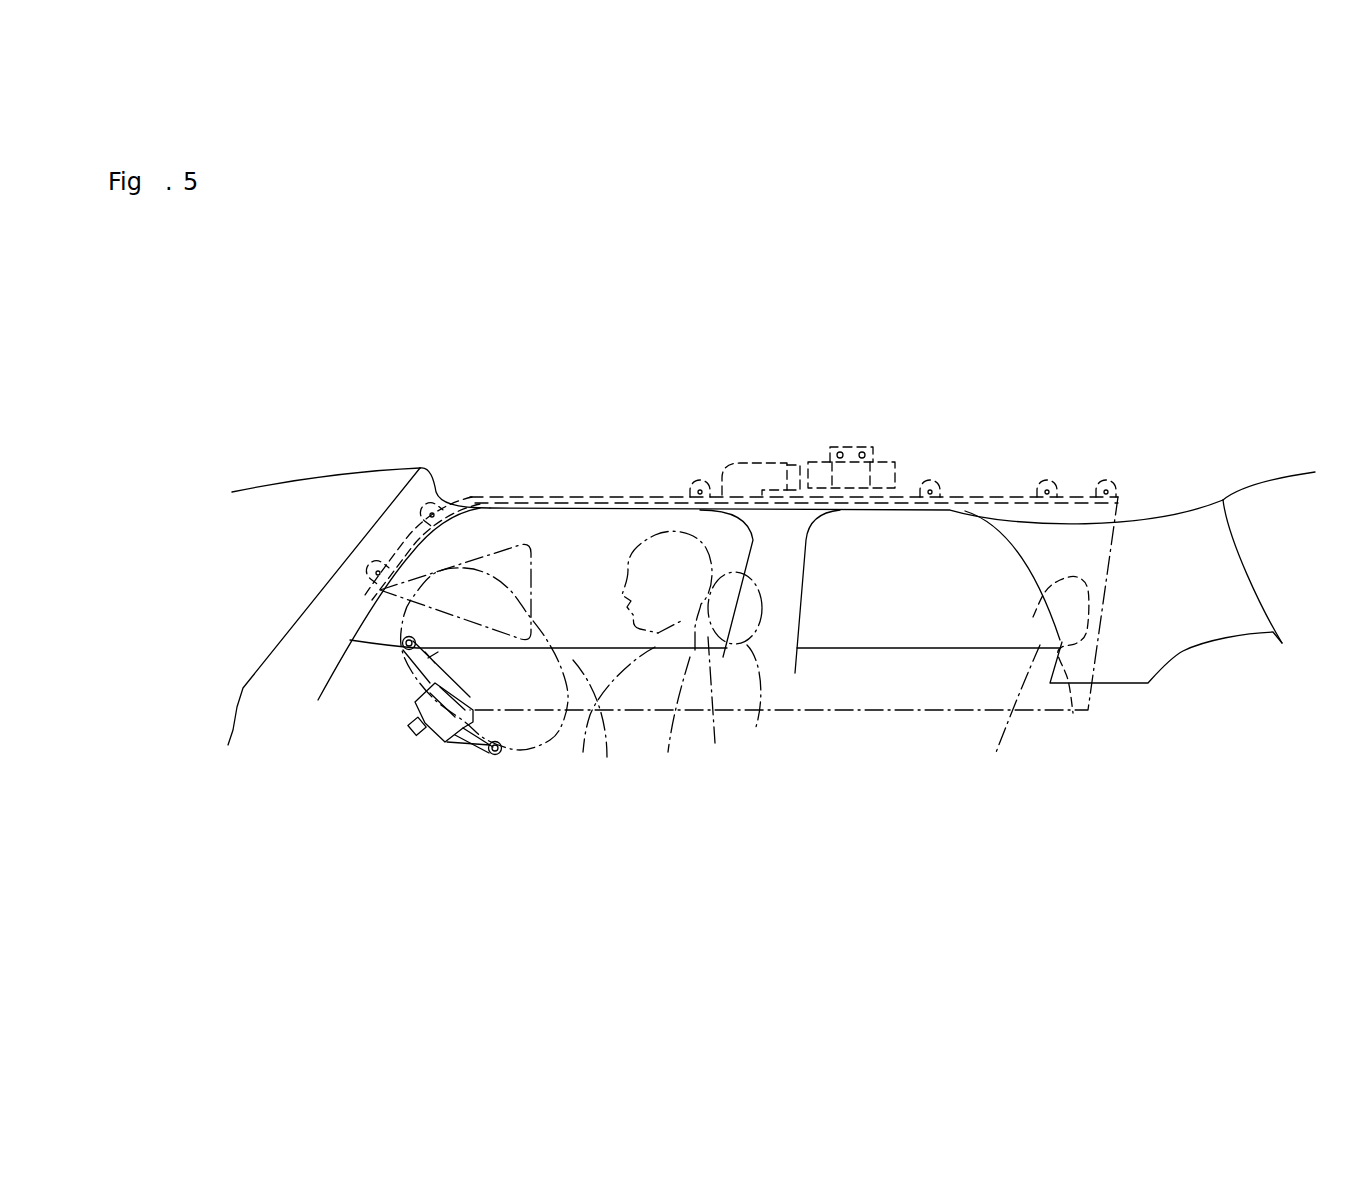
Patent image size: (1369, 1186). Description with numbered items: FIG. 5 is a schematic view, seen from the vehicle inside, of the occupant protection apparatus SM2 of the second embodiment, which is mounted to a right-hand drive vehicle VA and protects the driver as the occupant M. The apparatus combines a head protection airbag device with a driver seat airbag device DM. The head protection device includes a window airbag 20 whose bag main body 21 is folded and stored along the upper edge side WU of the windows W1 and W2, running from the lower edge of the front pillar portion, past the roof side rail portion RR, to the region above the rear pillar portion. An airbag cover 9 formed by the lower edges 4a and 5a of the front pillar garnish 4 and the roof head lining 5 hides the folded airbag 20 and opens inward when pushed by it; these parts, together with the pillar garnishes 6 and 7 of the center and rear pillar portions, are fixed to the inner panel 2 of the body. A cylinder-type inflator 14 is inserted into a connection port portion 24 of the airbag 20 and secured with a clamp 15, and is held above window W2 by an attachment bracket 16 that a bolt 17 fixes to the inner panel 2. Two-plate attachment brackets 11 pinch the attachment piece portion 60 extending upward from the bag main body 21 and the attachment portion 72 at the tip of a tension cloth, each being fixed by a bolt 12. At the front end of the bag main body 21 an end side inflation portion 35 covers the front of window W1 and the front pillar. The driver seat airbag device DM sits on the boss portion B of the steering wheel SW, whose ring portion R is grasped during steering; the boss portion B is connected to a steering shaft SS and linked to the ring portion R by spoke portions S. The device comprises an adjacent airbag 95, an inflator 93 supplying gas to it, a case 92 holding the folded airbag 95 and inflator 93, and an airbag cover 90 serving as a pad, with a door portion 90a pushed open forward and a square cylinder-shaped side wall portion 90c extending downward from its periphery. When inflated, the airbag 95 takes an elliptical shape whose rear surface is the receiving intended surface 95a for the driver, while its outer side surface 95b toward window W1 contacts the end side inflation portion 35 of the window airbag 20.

The right-hand drive vehicle VA is at (1160, 357).
The roof side rail portion RR is at (573, 432).
The front pillar garnish 4 is at (300, 582).
The pillar garnish 6 is at (792, 610).
The pillar garnish 7 is at (1173, 620).
The window W1 is at (667, 683).
The window W2 is at (948, 632).
The airbag 95 is at (556, 630).
The side surface 95b is at (478, 613).
The receiving intended surface 95a is at (607, 757).
The window airbag 20 is at (1122, 497).
The bag main body 21 is at (1045, 713).
The attachment bracket 11 is at (392, 707).
The bolt 12 is at (365, 580).
The attachment piece portion 60 is at (1063, 483).
The attachment portion 72 is at (330, 578).
The connection port portion 24 is at (755, 458).
The clamp 15 is at (788, 463).
The bolt 17 is at (863, 447).
The inflator 14 is at (890, 463).
The attachment bracket 16 is at (848, 477).
The window upper edge WU is at (652, 503).
The occupant protection apparatus SM2 is at (352, 368).
The inner panel 2 is at (377, 403).
The airbag cover 9 is at (530, 363).
The lower edge 4a is at (400, 545).
The lower edge 5a is at (522, 505).
The roof head lining 5 is at (548, 430).
The occupant M is at (650, 757).
The door portion 90a is at (380, 590).
The airbag cover 90 is at (473, 689).
The driver seat airbag device DM is at (445, 760).
The boss portion B is at (407, 718).
The steering wheel SW is at (407, 668).
The end side inflation portion 35 is at (397, 630).
The case 92 is at (415, 692).
The steering shaft SS is at (417, 730).
The inflator 93 is at (433, 735).
The spoke portions S is at (477, 747).
The ring portion R is at (497, 762).
The side wall portion 90c is at (500, 752).